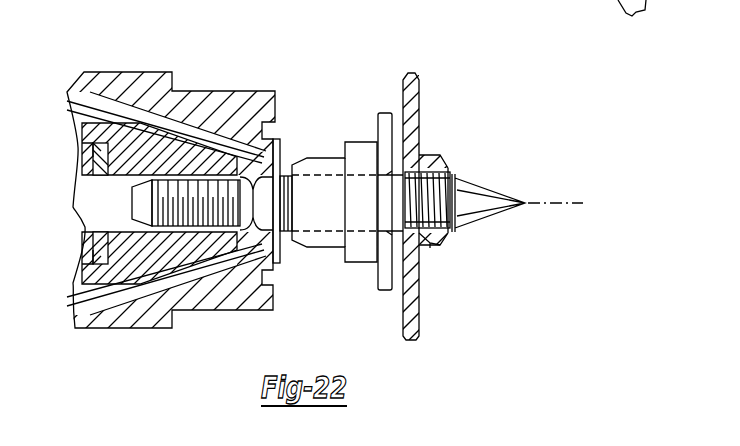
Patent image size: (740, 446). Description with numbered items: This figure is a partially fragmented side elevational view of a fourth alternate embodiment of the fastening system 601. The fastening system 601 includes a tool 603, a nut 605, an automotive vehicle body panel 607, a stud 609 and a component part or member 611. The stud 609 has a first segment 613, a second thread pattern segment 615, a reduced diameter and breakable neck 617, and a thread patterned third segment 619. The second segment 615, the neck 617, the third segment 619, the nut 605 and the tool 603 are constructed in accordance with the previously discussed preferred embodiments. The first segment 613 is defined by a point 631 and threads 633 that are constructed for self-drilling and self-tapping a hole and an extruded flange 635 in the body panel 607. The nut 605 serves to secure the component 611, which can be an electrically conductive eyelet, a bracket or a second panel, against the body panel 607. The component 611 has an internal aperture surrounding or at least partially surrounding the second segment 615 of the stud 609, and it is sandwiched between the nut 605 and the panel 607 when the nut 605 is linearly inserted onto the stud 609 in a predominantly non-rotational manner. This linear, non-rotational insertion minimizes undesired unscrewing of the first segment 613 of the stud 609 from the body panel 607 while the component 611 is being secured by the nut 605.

The fastening system 601 is at (555, 258).
The tool 603 is at (130, 323).
The nut 605 is at (327, 238).
The automotive vehicle body panel 607 is at (408, 75).
The stud 609 is at (500, 135).
The component part 611 is at (393, 292).
The first segment 613 is at (453, 232).
The second thread pattern segment 615 is at (290, 167).
The breakable neck 617 is at (255, 208).
The third segment 619 is at (200, 190).
The point 631 is at (478, 198).
The threads 633 is at (438, 160).
The extruded flange 635 is at (430, 245).